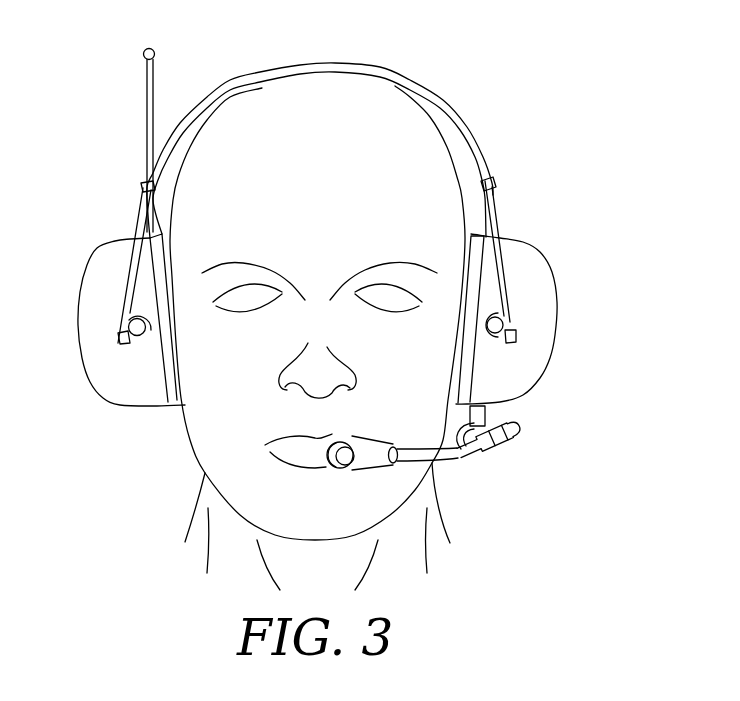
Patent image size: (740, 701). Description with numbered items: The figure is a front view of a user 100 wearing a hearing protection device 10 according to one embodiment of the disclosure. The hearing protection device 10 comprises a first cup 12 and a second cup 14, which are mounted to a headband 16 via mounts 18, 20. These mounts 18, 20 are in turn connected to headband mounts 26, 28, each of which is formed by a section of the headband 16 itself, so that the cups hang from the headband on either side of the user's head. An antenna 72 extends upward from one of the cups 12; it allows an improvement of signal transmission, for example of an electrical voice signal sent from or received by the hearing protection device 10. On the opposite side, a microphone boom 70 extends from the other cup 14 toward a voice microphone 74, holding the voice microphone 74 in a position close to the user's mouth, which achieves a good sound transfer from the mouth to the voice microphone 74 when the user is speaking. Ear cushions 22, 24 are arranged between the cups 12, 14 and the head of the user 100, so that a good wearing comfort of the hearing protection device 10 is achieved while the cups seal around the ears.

The hearing protection device 10 is at (492, 53).
The first cup 12 is at (116, 241).
The second cup 14 is at (523, 243).
The headband 16 is at (387, 72).
The mount 18 is at (145, 338).
The mount 20 is at (516, 338).
The ear cushion 22 is at (183, 406).
The ear cushion 24 is at (488, 186).
The headband mount 26 is at (128, 297).
The headband mount 28 is at (507, 287).
The microphone boom 70 is at (452, 462).
The antenna 72 is at (145, 82).
The voice microphone 74 is at (337, 459).
The user 100 is at (190, 453).